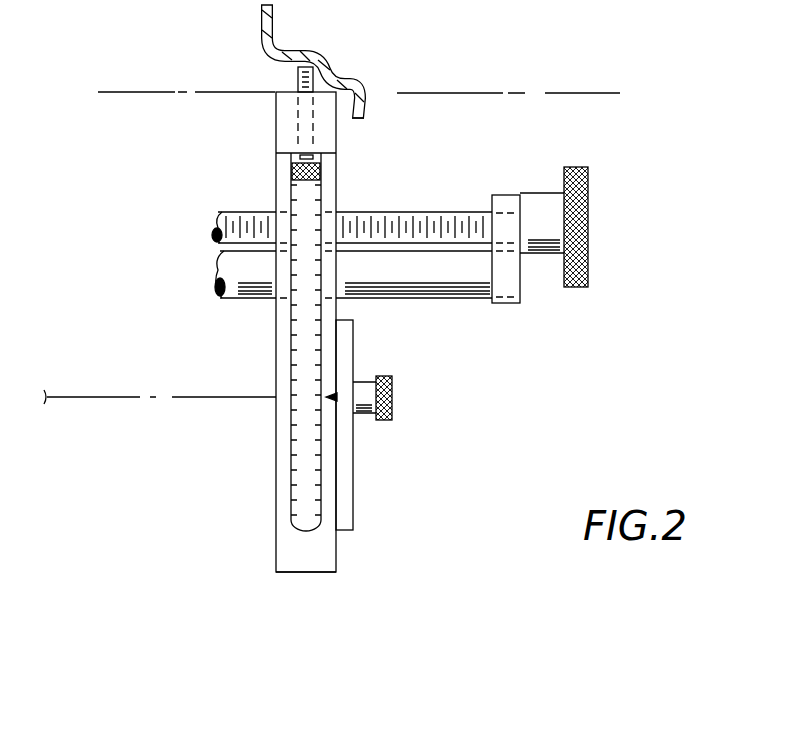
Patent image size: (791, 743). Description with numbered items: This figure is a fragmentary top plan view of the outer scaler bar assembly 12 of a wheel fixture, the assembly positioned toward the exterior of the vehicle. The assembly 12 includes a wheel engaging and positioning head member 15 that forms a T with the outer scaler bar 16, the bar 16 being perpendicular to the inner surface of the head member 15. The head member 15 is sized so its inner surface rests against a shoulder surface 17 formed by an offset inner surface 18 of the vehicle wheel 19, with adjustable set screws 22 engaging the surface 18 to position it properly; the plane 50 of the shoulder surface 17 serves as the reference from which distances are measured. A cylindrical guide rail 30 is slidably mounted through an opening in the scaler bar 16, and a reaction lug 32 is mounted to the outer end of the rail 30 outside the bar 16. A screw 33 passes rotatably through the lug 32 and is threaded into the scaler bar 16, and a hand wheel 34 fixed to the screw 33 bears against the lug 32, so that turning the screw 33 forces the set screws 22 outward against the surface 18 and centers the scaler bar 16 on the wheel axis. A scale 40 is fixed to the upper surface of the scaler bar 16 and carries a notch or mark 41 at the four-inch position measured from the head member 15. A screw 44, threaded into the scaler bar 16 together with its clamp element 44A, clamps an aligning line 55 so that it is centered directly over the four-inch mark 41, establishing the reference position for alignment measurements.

The outer scaler bar assembly 12 is at (258, 318).
The head member 15 is at (280, 133).
The outer scaler bar 16 is at (307, 572).
The shoulder surface 17 is at (340, 93).
The offset inner surface 18 is at (280, 62).
The vehicle wheel 19 is at (275, 22).
The set screws 22 is at (322, 172).
The cylindrical guide rail 30 is at (432, 298).
The reaction lug 32 is at (517, 285).
The screw 33 is at (415, 213).
The hand wheel 34 is at (578, 167).
The scale 40 is at (277, 480).
The mark 41 is at (333, 398).
The screw 44 is at (393, 397).
The pointer slide block 44A is at (353, 507).
The plane 50 is at (162, 92).
The line 55 is at (100, 397).